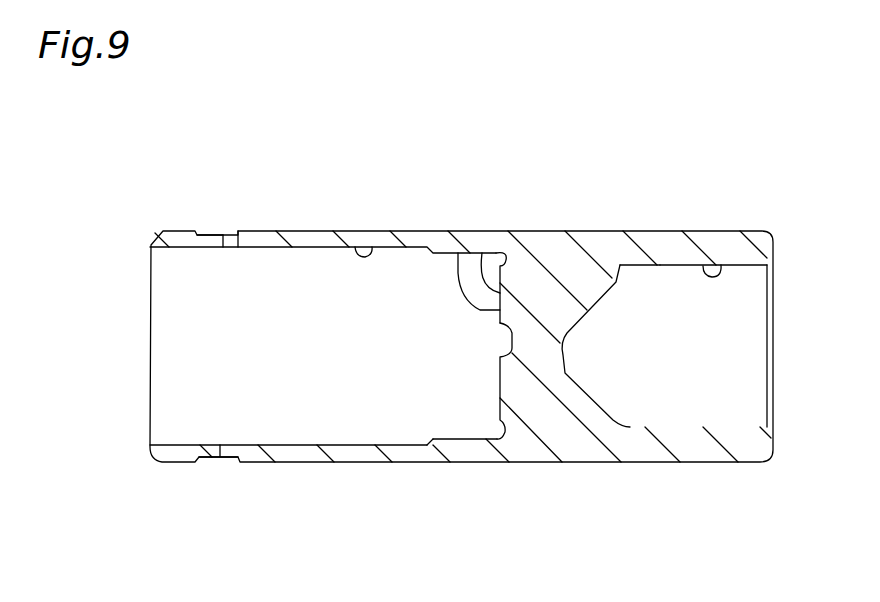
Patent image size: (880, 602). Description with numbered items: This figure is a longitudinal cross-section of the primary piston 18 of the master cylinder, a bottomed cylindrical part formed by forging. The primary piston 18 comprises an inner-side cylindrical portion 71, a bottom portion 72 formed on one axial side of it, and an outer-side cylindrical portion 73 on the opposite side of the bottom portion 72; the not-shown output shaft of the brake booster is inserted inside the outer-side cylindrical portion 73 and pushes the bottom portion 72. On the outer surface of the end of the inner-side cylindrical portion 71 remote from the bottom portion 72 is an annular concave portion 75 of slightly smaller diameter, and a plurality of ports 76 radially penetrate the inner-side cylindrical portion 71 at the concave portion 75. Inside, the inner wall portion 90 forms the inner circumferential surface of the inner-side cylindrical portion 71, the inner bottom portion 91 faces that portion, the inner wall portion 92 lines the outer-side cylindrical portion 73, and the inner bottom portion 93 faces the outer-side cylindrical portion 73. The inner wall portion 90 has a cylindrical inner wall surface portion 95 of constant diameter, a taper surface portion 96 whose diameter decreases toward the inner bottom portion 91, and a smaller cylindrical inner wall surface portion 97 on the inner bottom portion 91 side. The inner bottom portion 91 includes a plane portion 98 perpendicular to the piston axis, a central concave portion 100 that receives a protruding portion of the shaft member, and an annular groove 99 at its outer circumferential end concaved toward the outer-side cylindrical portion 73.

The primary piston 18 is at (759, 197).
The inner-side cylindrical portion 71 is at (319, 240).
The bottom portion 72 is at (544, 287).
The outer-side cylindrical portion 73 is at (672, 245).
The annular concave portion 75 is at (206, 233).
The ports 76 is at (232, 245).
The inner wall portion 90 is at (355, 247).
The inner bottom portion 91 is at (459, 253).
The inner wall portion 92 is at (721, 265).
The inner bottom portion 93 is at (610, 260).
The cylindrical inner wall surface portion 95 is at (295, 445).
The taper surface portion 96 is at (433, 445).
The cylindrical inner wall surface portion 97 is at (472, 439).
The plane portion 98 is at (482, 253).
The annular groove 99 is at (512, 237).
The concave portion 100 is at (500, 356).